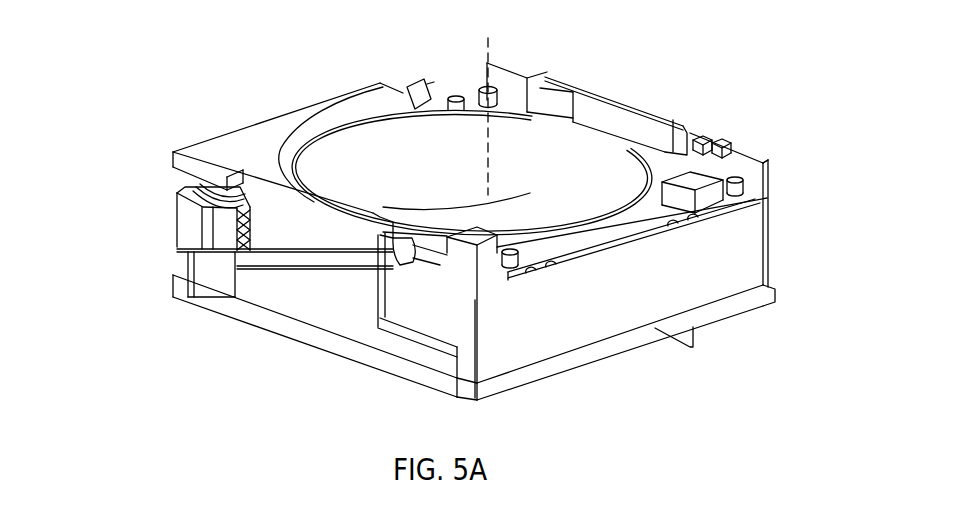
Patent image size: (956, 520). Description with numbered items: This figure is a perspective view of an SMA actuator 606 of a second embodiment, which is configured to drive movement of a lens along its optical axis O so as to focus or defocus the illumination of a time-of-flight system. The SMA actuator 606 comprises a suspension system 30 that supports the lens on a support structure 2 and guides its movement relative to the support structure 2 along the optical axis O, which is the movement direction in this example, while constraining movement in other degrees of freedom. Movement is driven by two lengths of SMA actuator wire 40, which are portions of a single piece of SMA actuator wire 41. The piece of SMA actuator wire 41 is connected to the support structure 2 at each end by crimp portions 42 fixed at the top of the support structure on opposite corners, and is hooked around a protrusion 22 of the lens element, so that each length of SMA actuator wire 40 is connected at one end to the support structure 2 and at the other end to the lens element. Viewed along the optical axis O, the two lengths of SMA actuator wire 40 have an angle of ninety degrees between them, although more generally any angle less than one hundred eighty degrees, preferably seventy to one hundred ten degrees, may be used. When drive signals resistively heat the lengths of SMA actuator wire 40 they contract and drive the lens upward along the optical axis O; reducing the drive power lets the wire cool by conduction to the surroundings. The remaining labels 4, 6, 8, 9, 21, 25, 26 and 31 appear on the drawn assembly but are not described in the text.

The SMA actuator 606 is at (150, 134).
The support structure 2 is at (240, 146).
The base 4 is at (750, 305).
The housing 6 is at (745, 243).
The terminal block 8 is at (707, 137).
The terminal block 9 is at (726, 139).
The lens holder frame 21 is at (653, 150).
The protrusion 22 is at (208, 276).
The flexible board 25 is at (593, 153).
The housing wall corner 26 is at (767, 163).
The suspension system 30 is at (272, 229).
The spring 31 is at (240, 227).
The lengths of SMA actuator wire 40 is at (300, 253).
The piece of SMA actuator wire 41 is at (333, 270).
The crimp portions 42 is at (409, 82).
The optical axis O is at (496, 106).